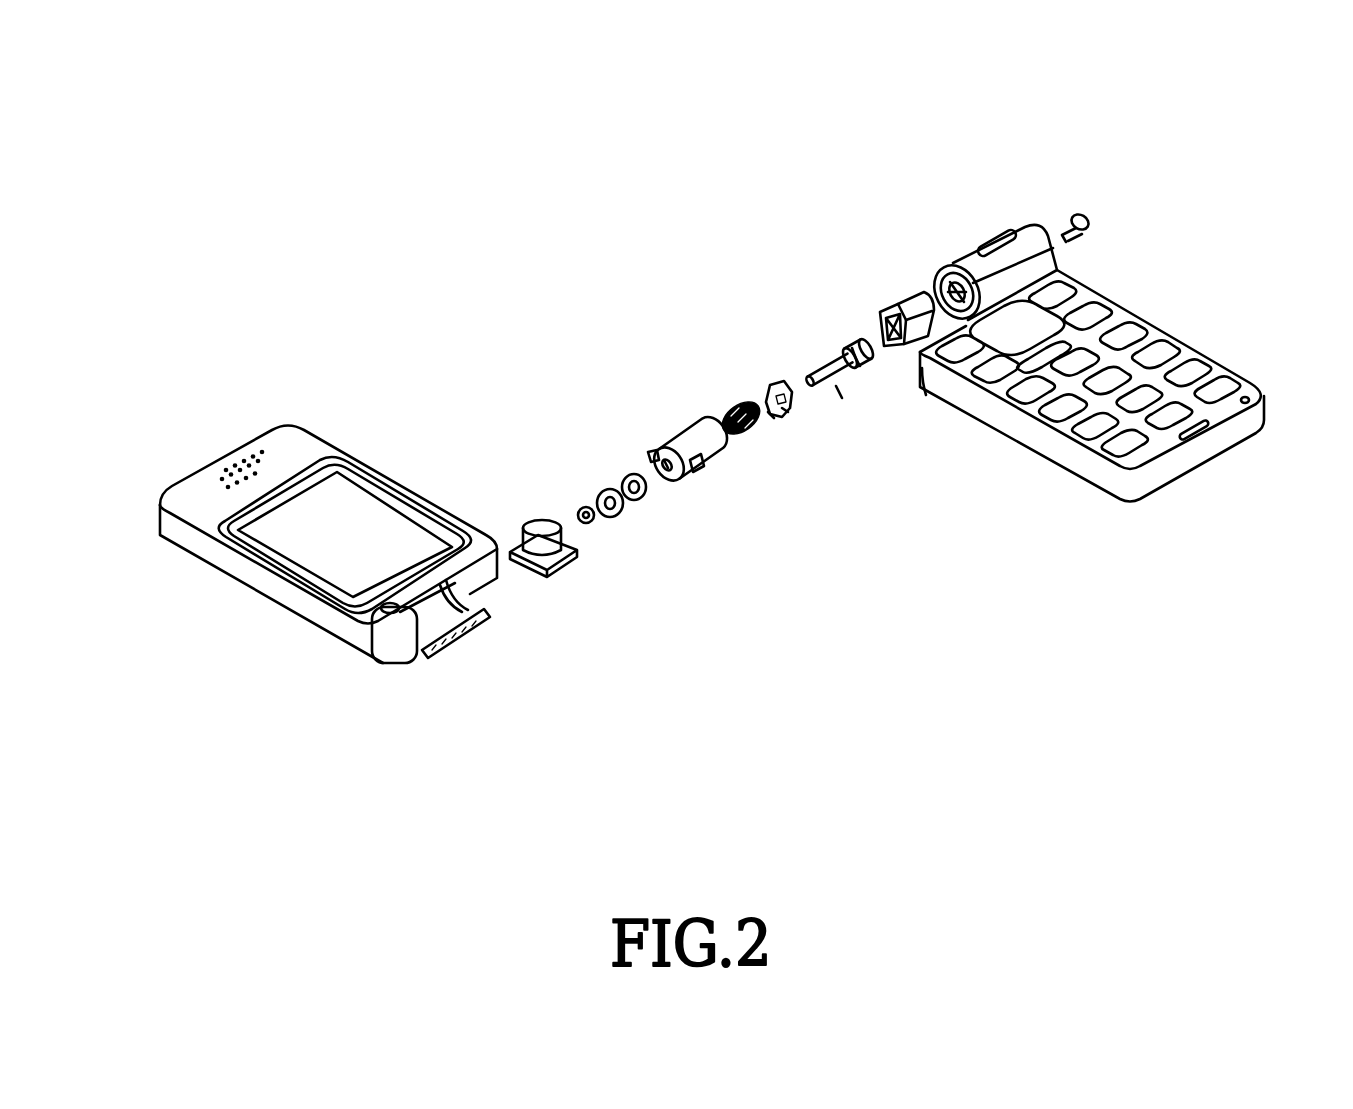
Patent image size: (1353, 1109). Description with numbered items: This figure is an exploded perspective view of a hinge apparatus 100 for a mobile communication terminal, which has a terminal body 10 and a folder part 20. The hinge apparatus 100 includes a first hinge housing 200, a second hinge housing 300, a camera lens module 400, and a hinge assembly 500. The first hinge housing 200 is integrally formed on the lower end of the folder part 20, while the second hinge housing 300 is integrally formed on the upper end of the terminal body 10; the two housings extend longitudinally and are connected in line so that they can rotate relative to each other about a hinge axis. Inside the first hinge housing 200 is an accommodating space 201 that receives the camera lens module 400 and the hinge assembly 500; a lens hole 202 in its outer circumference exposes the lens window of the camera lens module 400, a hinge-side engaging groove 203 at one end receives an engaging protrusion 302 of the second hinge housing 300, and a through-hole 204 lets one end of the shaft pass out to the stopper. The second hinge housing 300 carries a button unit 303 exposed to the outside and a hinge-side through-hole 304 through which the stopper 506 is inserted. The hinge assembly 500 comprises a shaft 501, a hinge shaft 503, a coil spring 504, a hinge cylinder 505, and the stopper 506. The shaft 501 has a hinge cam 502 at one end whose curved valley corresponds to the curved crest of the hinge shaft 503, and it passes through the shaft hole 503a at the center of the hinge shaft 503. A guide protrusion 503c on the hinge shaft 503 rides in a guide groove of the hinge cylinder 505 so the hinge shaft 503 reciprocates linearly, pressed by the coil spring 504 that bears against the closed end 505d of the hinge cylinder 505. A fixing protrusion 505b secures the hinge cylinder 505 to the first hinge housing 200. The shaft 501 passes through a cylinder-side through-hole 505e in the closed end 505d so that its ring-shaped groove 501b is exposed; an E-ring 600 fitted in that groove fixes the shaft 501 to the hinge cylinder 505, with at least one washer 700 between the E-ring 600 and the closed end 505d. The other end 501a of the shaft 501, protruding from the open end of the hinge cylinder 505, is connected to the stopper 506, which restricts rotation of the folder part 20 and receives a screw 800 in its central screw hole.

The terminal body 10 is at (1173, 335).
The folder part 20 is at (335, 432).
The hinge apparatus 100 is at (598, 276).
The first hinge housing 200 is at (577, 693).
The accommodating space 201 is at (394, 650).
The lens hole 202 is at (419, 650).
The hinge-side engaging groove 203 is at (468, 613).
The through-hole 204 is at (484, 606).
The second hinge housing 300 is at (987, 137).
The engaging protrusion 302 is at (965, 272).
The button unit 303 is at (1005, 238).
The hinge-side through-hole 304 is at (922, 285).
The camera lens module 400 is at (542, 520).
The hinge assembly 500 is at (833, 247).
The shaft 501 is at (823, 372).
The one end of the shaft 501a is at (926, 395).
The ring-shaped groove 501b is at (842, 398).
The hinge cam 502 is at (858, 366).
The hinge shaft 503 is at (776, 384).
The shaft hole 503a is at (771, 418).
The guide protrusion 503c is at (788, 412).
The coil spring 504 is at (738, 405).
The hinge cylinder 505 is at (694, 440).
The fixing protrusion 505b is at (705, 476).
The closed end 505d is at (667, 469).
The cylinder-side through-hole 505e is at (656, 460).
The stopper 506 is at (896, 294).
The E-ring 600 is at (582, 506).
The washer 700 is at (628, 476).
The screw 800 is at (1088, 213).